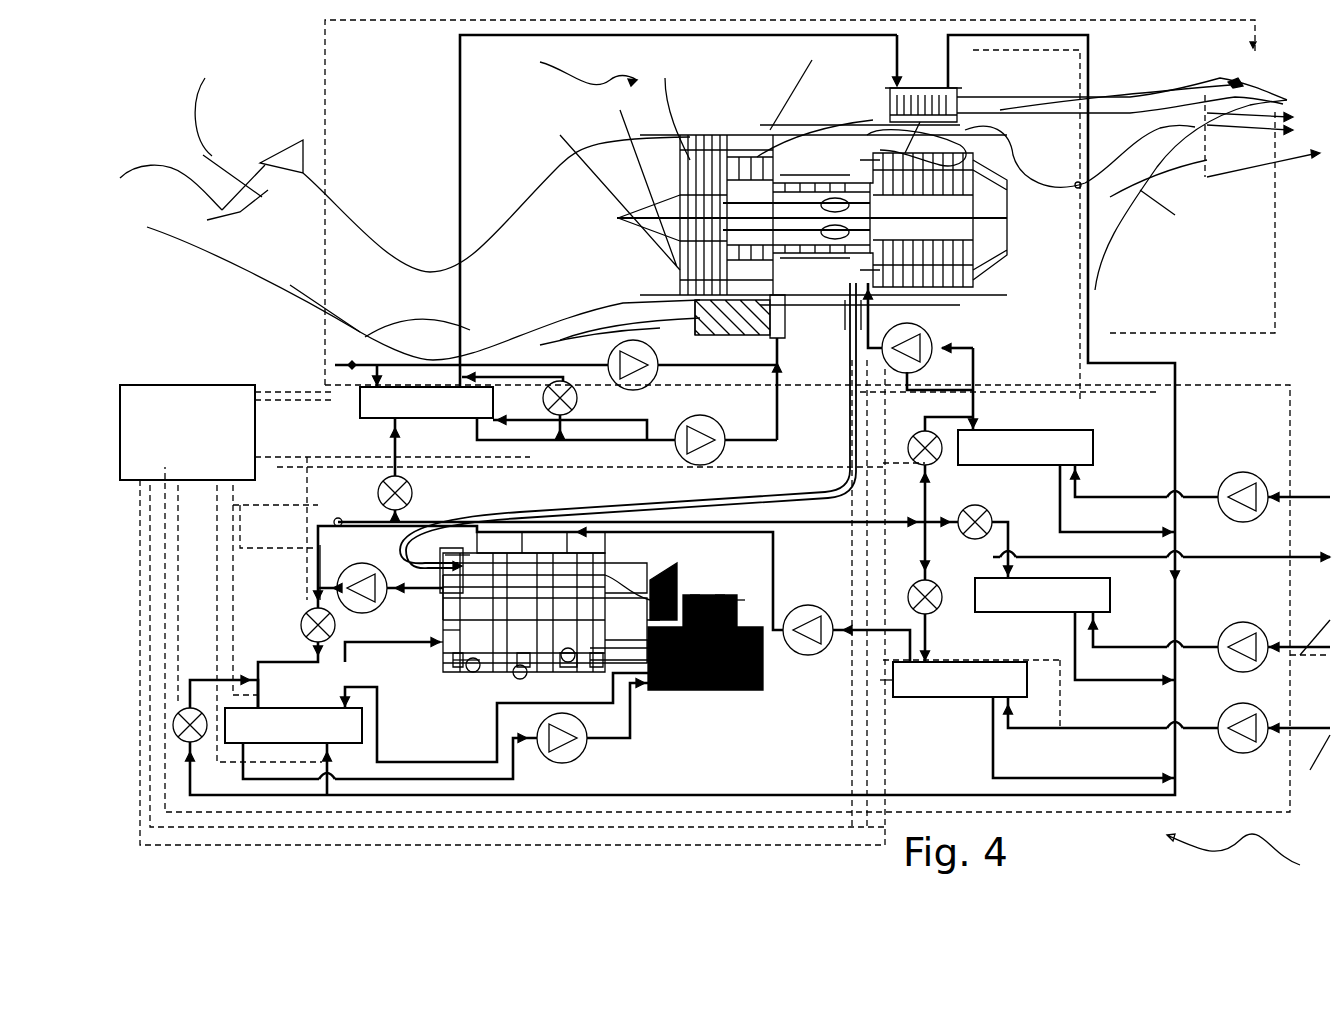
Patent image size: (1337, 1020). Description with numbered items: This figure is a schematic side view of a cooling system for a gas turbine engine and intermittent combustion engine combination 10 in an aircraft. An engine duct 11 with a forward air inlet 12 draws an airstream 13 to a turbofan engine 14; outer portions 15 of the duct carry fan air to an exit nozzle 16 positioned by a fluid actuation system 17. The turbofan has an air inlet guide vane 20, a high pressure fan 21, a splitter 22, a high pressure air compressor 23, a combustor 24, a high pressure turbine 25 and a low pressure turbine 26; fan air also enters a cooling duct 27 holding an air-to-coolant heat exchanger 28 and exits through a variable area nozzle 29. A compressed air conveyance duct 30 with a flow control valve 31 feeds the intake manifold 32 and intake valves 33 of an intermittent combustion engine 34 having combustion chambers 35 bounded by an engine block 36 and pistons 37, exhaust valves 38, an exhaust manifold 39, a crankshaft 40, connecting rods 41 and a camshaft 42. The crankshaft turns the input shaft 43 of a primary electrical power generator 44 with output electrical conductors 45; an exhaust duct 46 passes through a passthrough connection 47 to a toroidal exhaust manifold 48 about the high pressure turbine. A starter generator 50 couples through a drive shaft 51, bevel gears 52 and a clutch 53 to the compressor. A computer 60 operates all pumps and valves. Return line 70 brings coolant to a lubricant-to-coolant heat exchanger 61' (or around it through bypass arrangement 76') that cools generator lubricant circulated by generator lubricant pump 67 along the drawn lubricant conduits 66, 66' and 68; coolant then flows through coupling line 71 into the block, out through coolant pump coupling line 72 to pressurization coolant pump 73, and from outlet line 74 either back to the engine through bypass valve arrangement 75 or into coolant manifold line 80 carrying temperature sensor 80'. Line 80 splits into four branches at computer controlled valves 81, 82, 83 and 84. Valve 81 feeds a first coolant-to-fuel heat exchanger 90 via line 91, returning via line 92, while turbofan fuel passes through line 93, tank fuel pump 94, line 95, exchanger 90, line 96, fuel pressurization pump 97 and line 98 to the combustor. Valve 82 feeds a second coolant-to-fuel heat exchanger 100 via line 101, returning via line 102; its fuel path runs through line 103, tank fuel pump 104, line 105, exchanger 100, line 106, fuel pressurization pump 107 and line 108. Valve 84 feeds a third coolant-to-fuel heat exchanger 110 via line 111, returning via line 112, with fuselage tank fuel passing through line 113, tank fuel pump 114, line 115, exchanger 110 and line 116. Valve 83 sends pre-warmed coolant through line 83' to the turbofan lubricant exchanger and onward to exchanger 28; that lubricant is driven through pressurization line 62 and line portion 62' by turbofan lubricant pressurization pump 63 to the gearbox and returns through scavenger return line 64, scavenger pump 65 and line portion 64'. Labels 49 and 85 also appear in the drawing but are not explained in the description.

The aircraft 10 is at (1248, 855).
The nacelle 11 is at (806, 230).
The airflow 12 is at (170, 213).
The airflow 13 is at (212, 153).
The engine inlet 14 is at (496, 158).
The air flow path 15 is at (940, 193).
The exhaust flow 16 is at (1144, 127).
The exhaust flow 17 is at (1136, 109).
The gas turbine engine 20 is at (640, 135).
The fan 21 is at (616, 163).
The compressor 22 is at (760, 135).
The shaft 23 is at (800, 135).
The turbine 24 is at (870, 175).
The heat exchanger 25 is at (960, 95).
The heat exchanger 26 is at (1000, 110).
The wing 27 is at (1170, 85).
The cooling line 28 is at (911, 59).
The flap 29 is at (1233, 78).
The drive shaft 30 is at (847, 430).
The shaft housing 31 is at (843, 328).
The gearbox housing 32 is at (522, 543).
The gearbox 33 is at (510, 612).
The oil tank 34 is at (358, 717).
The oil supply line 35 is at (409, 630).
The gear 36 is at (414, 598).
The oil line 37 is at (431, 629).
The generator housing 38 is at (625, 613).
The oil return 39 is at (582, 550).
The accessory drive 40 is at (500, 670).
The accessory 41 is at (450, 660).
The coupling 42 is at (446, 560).
The generator 43 is at (660, 660).
The stator 44 is at (724, 609).
The motor generator 45 is at (765, 665).
The rotor 46 is at (665, 575).
The winding 47 is at (690, 595).
The winding 48 is at (728, 577).
The winding 49 is at (750, 583).
The bleed port 50 is at (807, 338).
The bleed line 51 is at (794, 389).
The heat exchanger 52 is at (732, 328).
The heat exchanger 53 is at (714, 328).
The controller 60 is at (205, 378).
The heat exchanger 61' is at (323, 715).
The coolant line 62 is at (590, 457).
The pump 62' is at (638, 444).
The return line 63 is at (648, 406).
The pump 64 is at (556, 365).
The line 64' is at (540, 352).
The line 65 is at (630, 330).
The oil line 66 is at (390, 765).
The oil line 66' is at (616, 709).
The oil pump 67 is at (590, 752).
The oil return line 68 is at (470, 760).
The cooling circuit 70 is at (570, 760).
The line 71 is at (360, 660).
The coupling 72 is at (458, 566).
The line 73 is at (352, 562).
The pump 74 is at (352, 566).
The valve 75 is at (311, 658).
The valve 76' is at (203, 752).
The coolant line 80 is at (637, 522).
The junction 80' is at (356, 509).
The valve 81 is at (930, 436).
The valve 82 is at (915, 582).
The valve 83 is at (411, 470).
The line 83' is at (416, 442).
The valve 84 is at (985, 510).
The line 85 is at (600, 332).
The heat exchanger 90 is at (1095, 440).
The line 91 is at (995, 418).
The line 92 is at (1085, 532).
The line 93 is at (1299, 488).
The pump 94 is at (1238, 472).
The line 95 is at (1100, 497).
The line 96 is at (975, 375).
The line 97 is at (978, 343).
The pump 98 is at (935, 338).
The heat exchanger 100 is at (983, 662).
The line 101 is at (935, 645).
The line 102 is at (998, 772).
The line 103 is at (1301, 758).
The pump 104 is at (1228, 712).
The line 105 is at (1095, 728).
The line 106 is at (903, 701).
The pump 107 is at (822, 652).
The line 108 is at (775, 540).
The heat exchanger 110 is at (1112, 590).
The line 111 is at (1010, 525).
The line 112 is at (1080, 678).
The line 113 is at (1292, 616).
The pump 114 is at (1238, 622).
The line 115 is at (1110, 647).
The line 116 is at (1060, 557).